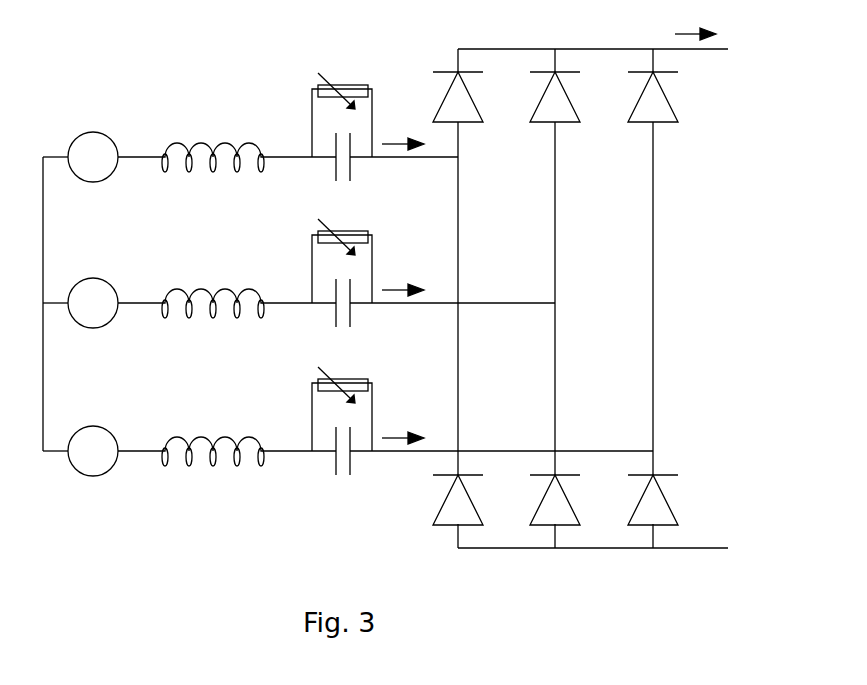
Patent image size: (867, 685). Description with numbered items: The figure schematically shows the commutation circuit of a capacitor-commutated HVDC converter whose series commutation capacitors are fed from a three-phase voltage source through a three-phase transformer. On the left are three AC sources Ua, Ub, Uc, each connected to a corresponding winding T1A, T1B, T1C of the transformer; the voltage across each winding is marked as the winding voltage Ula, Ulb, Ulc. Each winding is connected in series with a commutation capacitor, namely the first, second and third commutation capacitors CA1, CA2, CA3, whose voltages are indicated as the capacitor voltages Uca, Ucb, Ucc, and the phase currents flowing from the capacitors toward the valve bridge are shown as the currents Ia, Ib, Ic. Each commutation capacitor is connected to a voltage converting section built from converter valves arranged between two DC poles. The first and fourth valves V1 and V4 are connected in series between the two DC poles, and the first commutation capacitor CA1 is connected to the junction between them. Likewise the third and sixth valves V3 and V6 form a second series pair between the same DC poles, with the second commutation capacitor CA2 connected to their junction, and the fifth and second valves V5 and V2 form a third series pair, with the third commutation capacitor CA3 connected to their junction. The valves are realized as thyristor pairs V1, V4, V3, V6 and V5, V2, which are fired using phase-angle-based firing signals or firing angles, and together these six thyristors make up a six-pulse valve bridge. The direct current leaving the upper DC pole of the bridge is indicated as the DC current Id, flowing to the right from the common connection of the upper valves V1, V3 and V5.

The AC source Ua is at (102, 157).
The AC source Ub is at (102, 303).
The AC source Uc is at (102, 451).
The transformer winding T1A is at (247, 176).
The transformer winding T1B is at (247, 322).
The transformer winding T1C is at (247, 470).
The first commutation capacitor CA1 is at (385, 102).
The second commutation capacitor CA2 is at (433, 257).
The third commutation capacitor CA3 is at (482, 404).
The first valve V1 is at (443, 97).
The second valve V2 is at (640, 498).
The third valve V3 is at (543, 96).
The fourth valve V4 is at (445, 498).
The fifth valve V5 is at (638, 96).
The sixth valve V6 is at (545, 498).
The inductor voltage a Ula is at (198, 123).
The inductor voltage b Ulb is at (198, 269).
The inductor voltage c Ulc is at (198, 417).
The capacitor voltage a Uca is at (350, 122).
The capacitor voltage b Ucb is at (350, 268).
The capacitor voltage c Ucc is at (349, 416).
The phase a current Ia is at (403, 132).
The phase b current Ib is at (403, 278).
The phase c current Ic is at (403, 426).
The DC output current Id is at (695, 21).